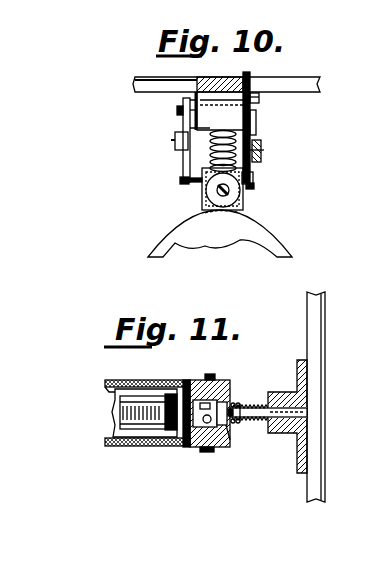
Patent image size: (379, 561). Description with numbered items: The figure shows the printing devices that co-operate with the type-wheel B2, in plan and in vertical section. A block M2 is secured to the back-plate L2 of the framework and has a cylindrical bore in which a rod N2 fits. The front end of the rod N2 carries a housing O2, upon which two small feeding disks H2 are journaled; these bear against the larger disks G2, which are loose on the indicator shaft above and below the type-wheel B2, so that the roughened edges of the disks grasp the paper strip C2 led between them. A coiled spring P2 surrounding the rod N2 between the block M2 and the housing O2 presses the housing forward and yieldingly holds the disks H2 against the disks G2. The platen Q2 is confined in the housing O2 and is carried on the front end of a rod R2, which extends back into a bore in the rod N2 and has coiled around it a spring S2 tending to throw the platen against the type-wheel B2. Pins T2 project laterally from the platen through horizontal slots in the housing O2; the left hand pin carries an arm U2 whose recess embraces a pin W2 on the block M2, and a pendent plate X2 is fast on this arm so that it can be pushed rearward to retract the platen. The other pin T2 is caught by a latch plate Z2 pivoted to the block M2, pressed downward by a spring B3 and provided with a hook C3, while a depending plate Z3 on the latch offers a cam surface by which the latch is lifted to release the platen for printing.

In FIG. 10, the back-plate L2 is at (232, 78).
In FIG. 11, the back-plate L2 is at (318, 363).
In FIG. 10, the block M2 is at (258, 98).
In FIG. 11, the block M2 is at (306, 394).
In FIG. 10, the spring B3 is at (252, 114).
In FIG. 10, the rod N2 is at (216, 128).
In FIG. 11, the rod N2 is at (270, 392).
In FIG. 10, the coiled spring P2 is at (212, 158).
In FIG. 11, the coiled spring P2 is at (240, 404).
In FIG. 10, the arm U2 is at (183, 164).
In FIG. 10, the pin W2 is at (177, 110).
In FIG. 10, the pendent plate X2 is at (172, 140).
In FIG. 10, the pins T2 is at (180, 181).
In FIG. 11, the pins T2 is at (232, 411).
In FIG. 10, the hook C3 is at (254, 186).
In FIG. 10, the housing O2 is at (202, 200).
In FIG. 11, the housing O2 is at (228, 440).
In FIG. 10, the feeding disks H2 is at (241, 196).
In FIG. 11, the feeding disks H2 is at (218, 380).
In FIG. 10, the latch plate Z2 is at (257, 128).
In FIG. 10, the depending plate Z3 is at (262, 152).
In FIG. 10, the feeding disks G2 is at (264, 236).
In FIG. 11, the feeding disks G2 is at (168, 380).
In FIG. 11, the spring S2 is at (202, 407).
In FIG. 11, the platen Q2 is at (202, 420).
In FIG. 11, the rod R2 is at (232, 426).
In FIG. 11, the paper strip C2 is at (186, 447).
In FIG. 11, the type-wheel B2 is at (128, 428).